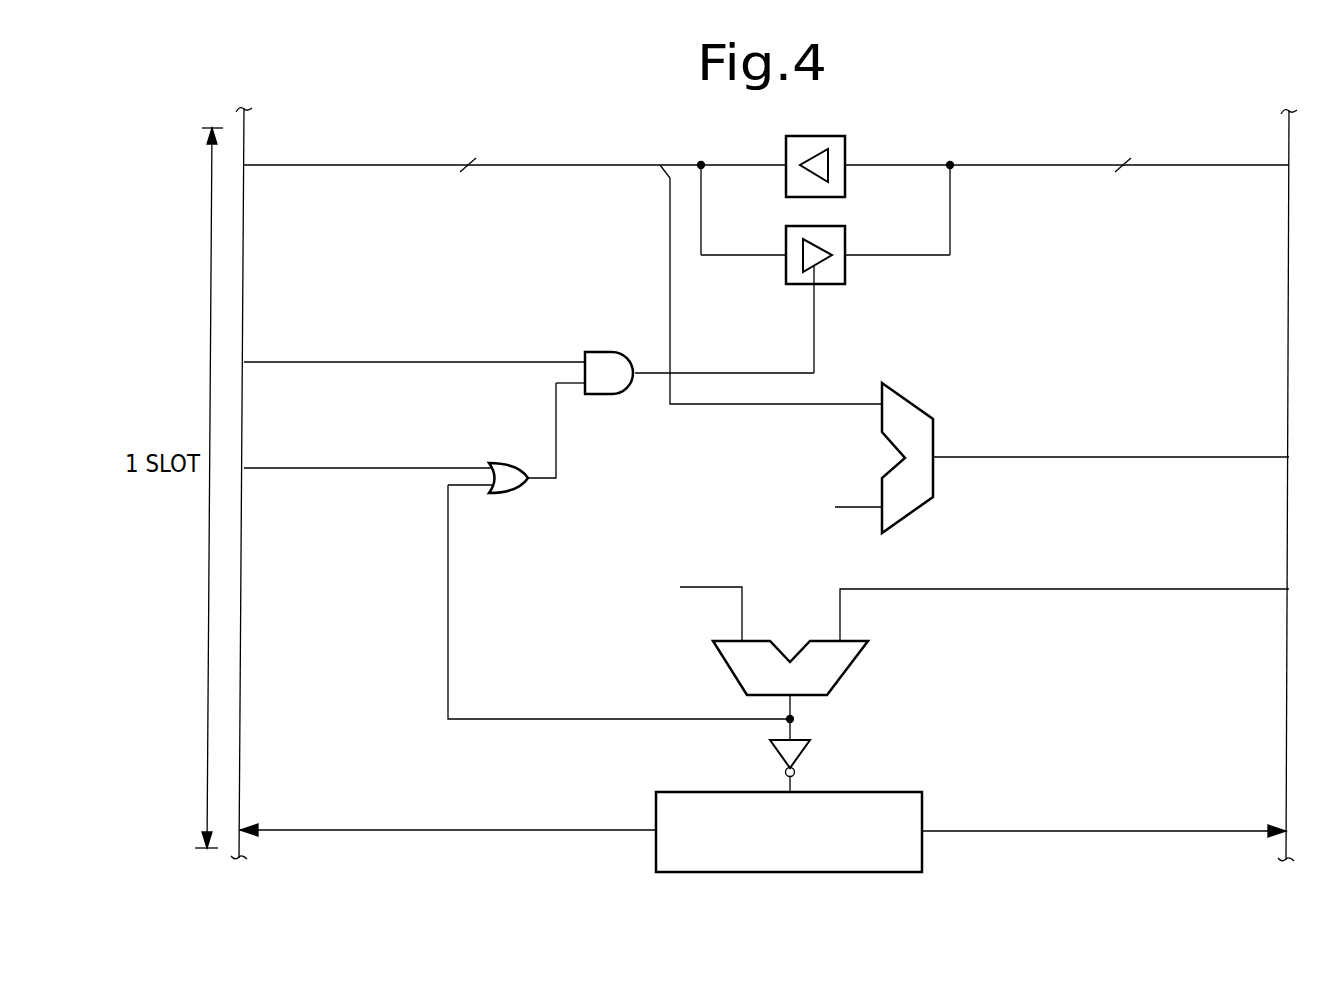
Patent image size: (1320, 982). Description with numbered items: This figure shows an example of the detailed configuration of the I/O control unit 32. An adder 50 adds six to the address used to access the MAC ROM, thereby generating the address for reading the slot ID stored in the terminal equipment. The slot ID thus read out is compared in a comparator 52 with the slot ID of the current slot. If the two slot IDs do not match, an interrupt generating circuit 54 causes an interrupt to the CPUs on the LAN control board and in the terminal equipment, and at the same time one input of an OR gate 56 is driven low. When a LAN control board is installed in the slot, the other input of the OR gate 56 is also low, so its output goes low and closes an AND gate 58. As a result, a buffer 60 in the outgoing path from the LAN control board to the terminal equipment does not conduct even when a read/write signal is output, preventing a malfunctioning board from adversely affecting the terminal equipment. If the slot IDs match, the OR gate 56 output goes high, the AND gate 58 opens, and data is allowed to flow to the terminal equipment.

The I/O control unit 32 is at (704, 131).
The adder 50 is at (922, 412).
The comparator 52 is at (848, 668).
The interrupt generating circuit 54 is at (897, 792).
The OR gate 56 is at (500, 493).
The AND gate 58 is at (618, 352).
The buffer 60 is at (845, 226).